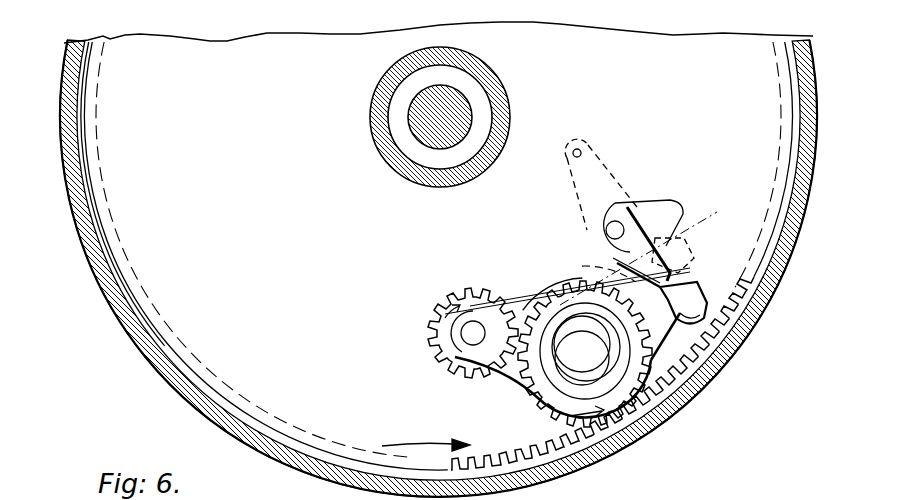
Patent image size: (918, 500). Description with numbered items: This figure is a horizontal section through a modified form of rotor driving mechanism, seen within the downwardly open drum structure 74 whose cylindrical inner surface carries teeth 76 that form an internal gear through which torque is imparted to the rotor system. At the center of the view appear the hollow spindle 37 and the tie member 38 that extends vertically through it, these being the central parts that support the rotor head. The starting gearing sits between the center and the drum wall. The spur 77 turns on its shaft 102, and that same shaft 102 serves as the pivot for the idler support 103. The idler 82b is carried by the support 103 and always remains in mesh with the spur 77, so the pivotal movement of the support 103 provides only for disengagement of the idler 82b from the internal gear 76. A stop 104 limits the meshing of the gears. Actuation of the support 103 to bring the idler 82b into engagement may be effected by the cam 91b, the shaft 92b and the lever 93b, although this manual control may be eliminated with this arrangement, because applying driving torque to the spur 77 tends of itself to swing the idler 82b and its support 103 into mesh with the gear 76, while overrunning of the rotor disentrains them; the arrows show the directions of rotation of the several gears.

The drum structure 74 is at (731, 370).
The teeth 76 is at (739, 284).
The hollow spindle 37 is at (498, 79).
The tie member 38 is at (458, 113).
The lever 93b is at (596, 150).
The shaft 92b is at (618, 230).
The cam 91b is at (660, 245).
The idler support 103 is at (680, 281).
The stop 104 is at (717, 290).
The idler 82b is at (540, 410).
The spur 77 is at (474, 291).
The shaft 102 is at (472, 333).